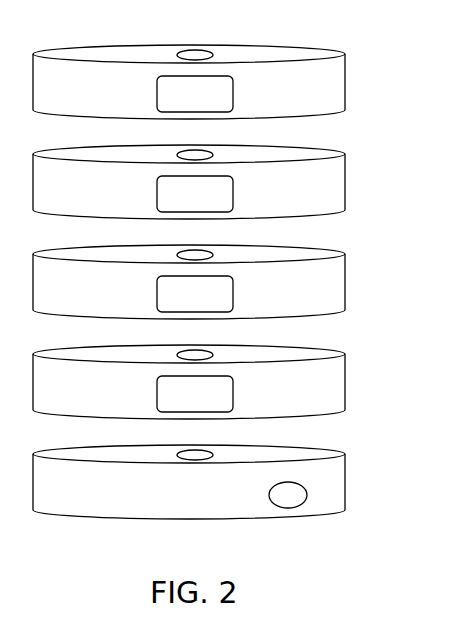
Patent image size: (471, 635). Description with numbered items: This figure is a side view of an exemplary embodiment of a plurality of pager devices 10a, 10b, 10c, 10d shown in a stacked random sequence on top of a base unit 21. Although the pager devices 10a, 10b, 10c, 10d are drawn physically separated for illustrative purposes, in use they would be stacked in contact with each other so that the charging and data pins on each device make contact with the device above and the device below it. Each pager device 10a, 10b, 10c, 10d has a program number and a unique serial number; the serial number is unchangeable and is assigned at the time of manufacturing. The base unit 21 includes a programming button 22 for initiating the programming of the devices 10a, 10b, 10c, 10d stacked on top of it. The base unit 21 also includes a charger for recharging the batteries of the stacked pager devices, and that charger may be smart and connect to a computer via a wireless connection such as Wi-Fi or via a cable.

The pager device 10a is at (347, 80).
The pager device 10b is at (347, 180).
The pager device 10c is at (347, 280).
The pager device 10d is at (347, 380).
The base unit 21 is at (347, 479).
The programming button 22 is at (295, 505).